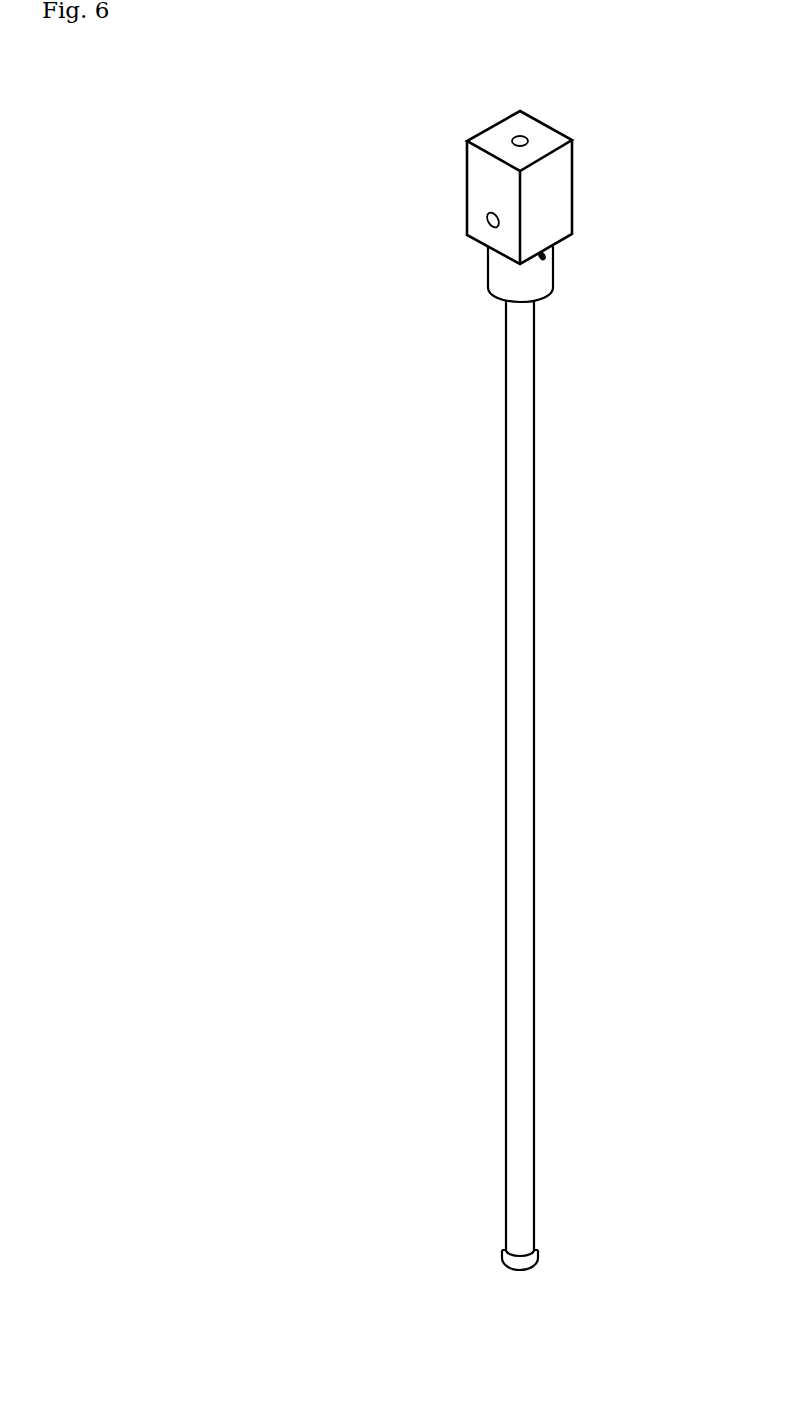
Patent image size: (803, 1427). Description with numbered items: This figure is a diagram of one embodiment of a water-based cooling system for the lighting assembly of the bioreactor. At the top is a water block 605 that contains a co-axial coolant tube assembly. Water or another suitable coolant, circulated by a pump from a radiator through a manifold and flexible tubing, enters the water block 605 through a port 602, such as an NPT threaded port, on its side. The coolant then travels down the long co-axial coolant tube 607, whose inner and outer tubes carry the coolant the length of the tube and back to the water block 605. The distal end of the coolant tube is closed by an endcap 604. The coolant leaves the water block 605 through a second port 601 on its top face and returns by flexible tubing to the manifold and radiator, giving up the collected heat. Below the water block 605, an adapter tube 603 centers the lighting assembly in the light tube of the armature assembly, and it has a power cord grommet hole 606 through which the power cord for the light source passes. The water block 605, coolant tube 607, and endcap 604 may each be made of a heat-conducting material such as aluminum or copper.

The port 601 is at (509, 127).
The port 602 is at (475, 212).
The adapter tube 603 is at (477, 299).
The endcap 604 is at (492, 1264).
The water block 605 is at (593, 197).
The power cord grommet hole 606 is at (565, 267).
The co-axial coolant tube 607 is at (553, 781).